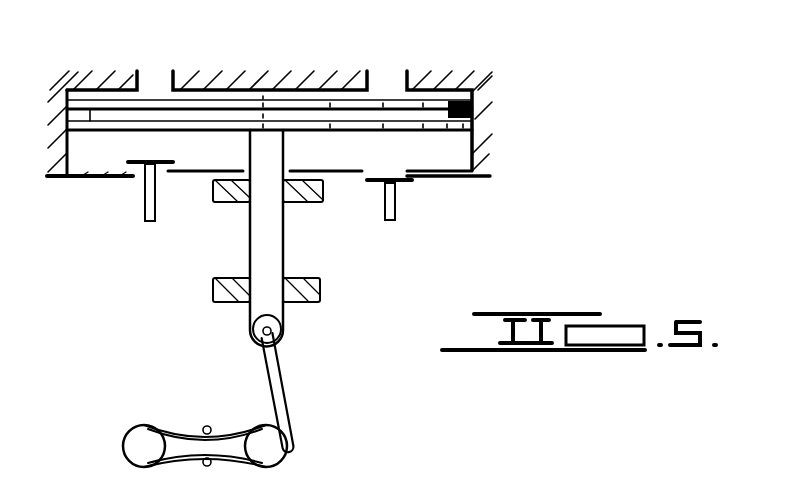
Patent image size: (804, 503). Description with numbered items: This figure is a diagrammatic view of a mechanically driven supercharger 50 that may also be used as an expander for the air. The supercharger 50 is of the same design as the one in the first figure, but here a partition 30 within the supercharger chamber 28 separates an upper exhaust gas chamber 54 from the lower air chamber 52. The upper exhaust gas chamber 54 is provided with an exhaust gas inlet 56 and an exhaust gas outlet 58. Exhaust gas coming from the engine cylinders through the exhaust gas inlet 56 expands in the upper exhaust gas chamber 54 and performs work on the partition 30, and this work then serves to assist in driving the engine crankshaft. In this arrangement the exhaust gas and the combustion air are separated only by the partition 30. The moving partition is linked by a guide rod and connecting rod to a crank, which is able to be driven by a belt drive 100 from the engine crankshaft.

The supercharger chamber 28 is at (108, 157).
The partition 30 is at (448, 112).
The supercharger 50 is at (443, 83).
The lower air chamber 52 is at (428, 146).
The upper exhaust gas chamber 54 is at (233, 96).
The exhaust gas inlet 56 is at (148, 79).
The exhaust gas outlet 58 is at (378, 82).
The belt drive 100 is at (182, 463).